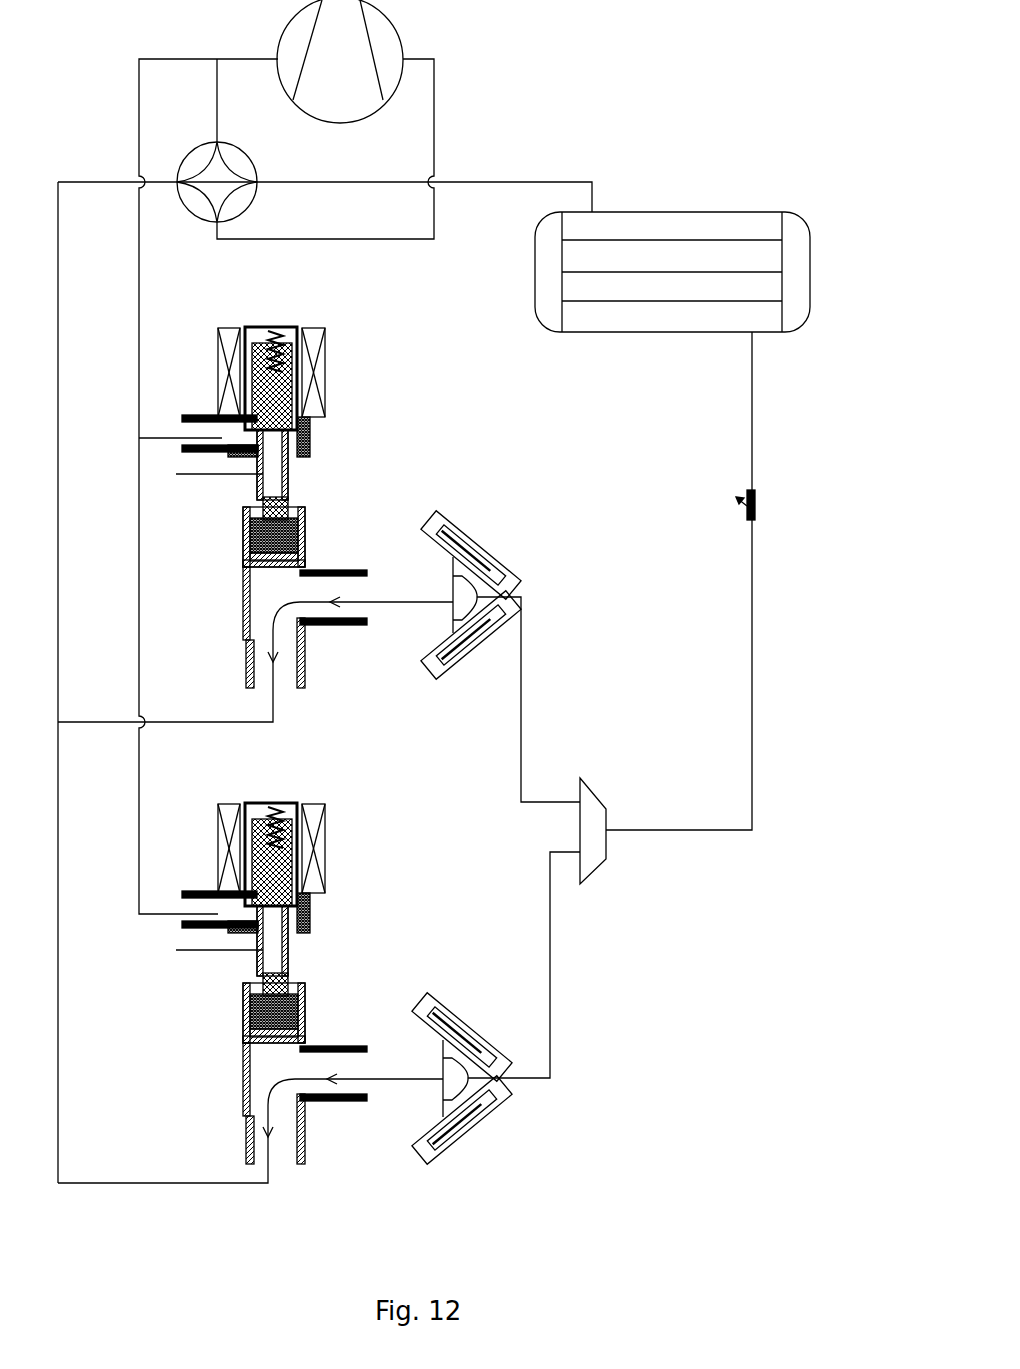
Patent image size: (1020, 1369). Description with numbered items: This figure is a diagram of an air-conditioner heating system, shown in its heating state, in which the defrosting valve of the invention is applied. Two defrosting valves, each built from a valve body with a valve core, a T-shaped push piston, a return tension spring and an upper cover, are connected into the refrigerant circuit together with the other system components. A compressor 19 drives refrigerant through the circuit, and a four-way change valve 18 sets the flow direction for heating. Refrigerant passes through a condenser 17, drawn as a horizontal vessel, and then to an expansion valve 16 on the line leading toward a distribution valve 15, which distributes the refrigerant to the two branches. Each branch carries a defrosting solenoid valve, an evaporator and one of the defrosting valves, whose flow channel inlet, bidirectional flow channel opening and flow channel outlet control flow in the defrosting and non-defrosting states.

The distribution valve 15 is at (591, 821).
The expansion valve 16 is at (757, 495).
The condenser 17 is at (652, 215).
The four-way change valve 18 is at (230, 205).
The compressor 19 is at (378, 52).